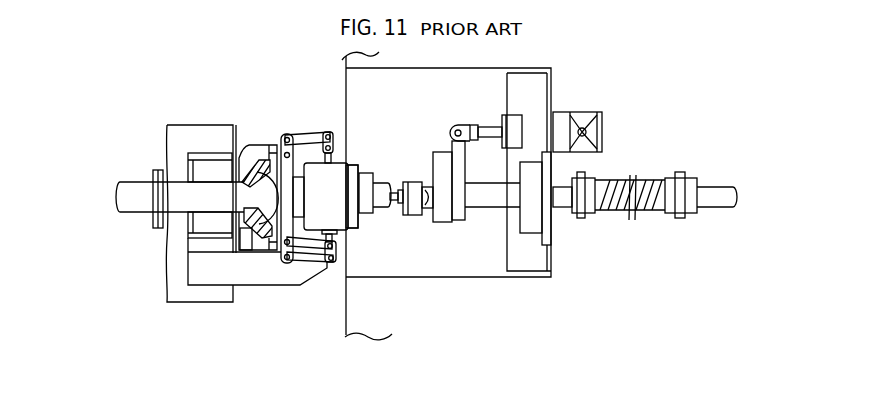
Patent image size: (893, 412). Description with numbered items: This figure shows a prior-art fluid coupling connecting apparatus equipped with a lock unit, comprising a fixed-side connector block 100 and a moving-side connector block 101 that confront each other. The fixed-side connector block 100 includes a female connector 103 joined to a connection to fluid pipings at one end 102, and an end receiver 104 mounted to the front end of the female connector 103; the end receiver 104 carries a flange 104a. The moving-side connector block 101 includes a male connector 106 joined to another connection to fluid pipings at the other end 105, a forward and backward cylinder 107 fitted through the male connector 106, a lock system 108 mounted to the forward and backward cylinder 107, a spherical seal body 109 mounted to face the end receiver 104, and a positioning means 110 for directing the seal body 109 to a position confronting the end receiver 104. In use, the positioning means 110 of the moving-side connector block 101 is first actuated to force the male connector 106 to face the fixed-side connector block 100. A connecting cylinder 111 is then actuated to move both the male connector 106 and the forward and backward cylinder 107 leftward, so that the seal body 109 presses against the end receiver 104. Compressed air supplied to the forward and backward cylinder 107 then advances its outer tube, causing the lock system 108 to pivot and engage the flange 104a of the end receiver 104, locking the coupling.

The fixed-side connector block 100 is at (197, 143).
The moving-side connector block 101 is at (447, 233).
The one end 102 is at (132, 192).
The female connector 103 is at (180, 200).
The end receiver 104 is at (238, 168).
The flange 104a is at (247, 150).
The other end 105 is at (706, 190).
The male connector 106 is at (383, 195).
The forward and backward cylinder 107 is at (340, 175).
The lock system 108 is at (272, 155).
The spherical seal body 109 is at (282, 226).
The positioning means 110 is at (453, 125).
The connecting cylinder 111 is at (412, 208).